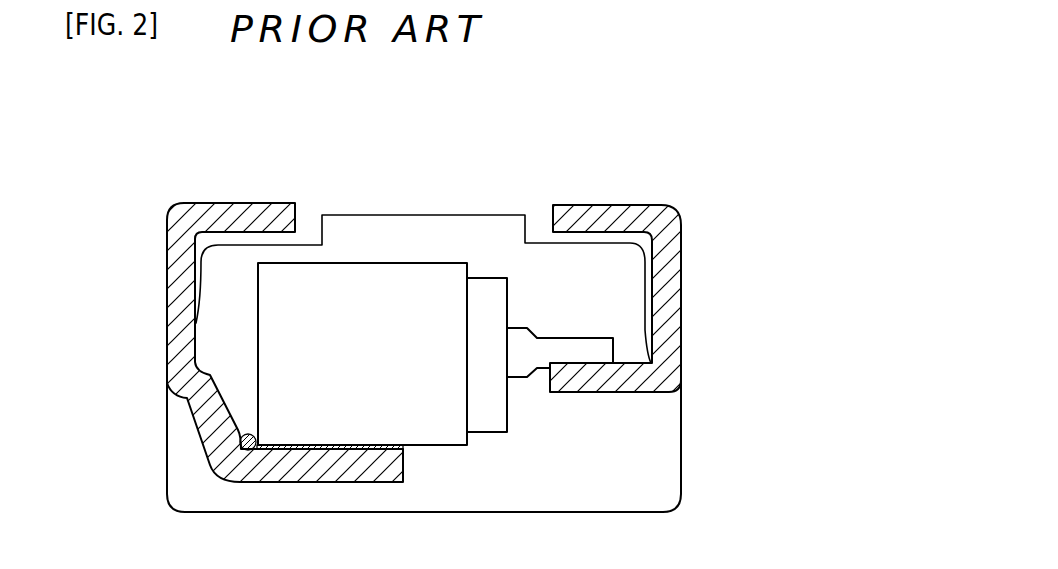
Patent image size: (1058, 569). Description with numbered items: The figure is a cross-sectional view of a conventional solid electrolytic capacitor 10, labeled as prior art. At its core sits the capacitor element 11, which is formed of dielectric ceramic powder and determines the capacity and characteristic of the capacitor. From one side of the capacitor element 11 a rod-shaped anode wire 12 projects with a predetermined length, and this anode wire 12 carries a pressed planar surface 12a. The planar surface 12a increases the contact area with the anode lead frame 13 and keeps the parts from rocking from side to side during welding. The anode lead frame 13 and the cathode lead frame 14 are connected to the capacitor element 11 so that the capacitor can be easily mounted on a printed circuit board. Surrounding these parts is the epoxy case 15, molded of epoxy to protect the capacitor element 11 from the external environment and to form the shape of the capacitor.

The solid electrolytic capacitor 10 is at (690, 168).
The capacitor element 11 is at (355, 282).
The anode wire 12 is at (618, 269).
The planar surface 12a is at (560, 337).
The anode lead frame 13 is at (673, 343).
The cathode lead frame 14 is at (167, 348).
The epoxy case 15 is at (498, 240).